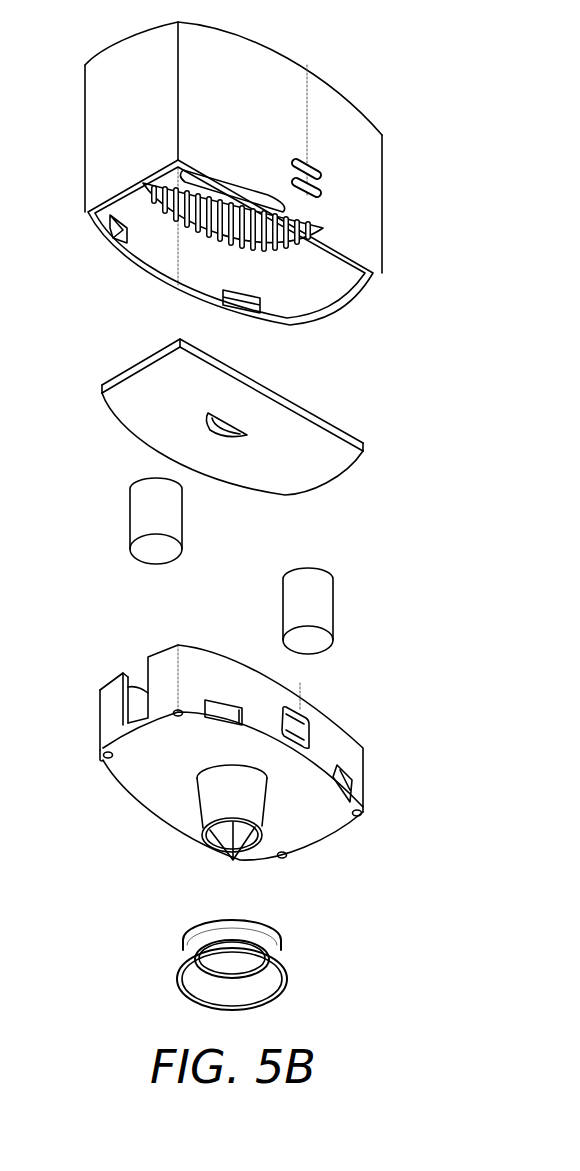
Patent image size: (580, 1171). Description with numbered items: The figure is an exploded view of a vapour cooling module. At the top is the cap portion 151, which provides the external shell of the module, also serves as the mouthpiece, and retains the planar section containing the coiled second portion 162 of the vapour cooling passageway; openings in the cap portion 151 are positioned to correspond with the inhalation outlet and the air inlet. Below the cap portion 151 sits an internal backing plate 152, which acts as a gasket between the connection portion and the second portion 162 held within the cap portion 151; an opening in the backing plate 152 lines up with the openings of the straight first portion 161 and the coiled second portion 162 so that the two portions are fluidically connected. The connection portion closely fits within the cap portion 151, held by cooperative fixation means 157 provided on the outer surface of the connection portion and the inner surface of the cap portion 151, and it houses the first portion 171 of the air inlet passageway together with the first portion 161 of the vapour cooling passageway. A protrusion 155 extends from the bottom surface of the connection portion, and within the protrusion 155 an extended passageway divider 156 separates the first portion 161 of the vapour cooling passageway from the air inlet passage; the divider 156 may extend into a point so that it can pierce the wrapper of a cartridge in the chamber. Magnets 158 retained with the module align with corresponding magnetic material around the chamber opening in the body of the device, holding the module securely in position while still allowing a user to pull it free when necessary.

The cap portion 151 is at (382, 185).
The internal backing plate 152 is at (353, 420).
The protrusion 155 is at (252, 869).
The extended passageway divider 156 is at (220, 853).
The cooperative fixation means 157 is at (110, 240).
The magnets 158 is at (334, 606).
The first portion of the vapour cooling passageway 161 is at (202, 847).
The second portion of the vapour cooling passageway 162 is at (160, 192).
The first portion of the air inlet passageway 171 is at (242, 836).